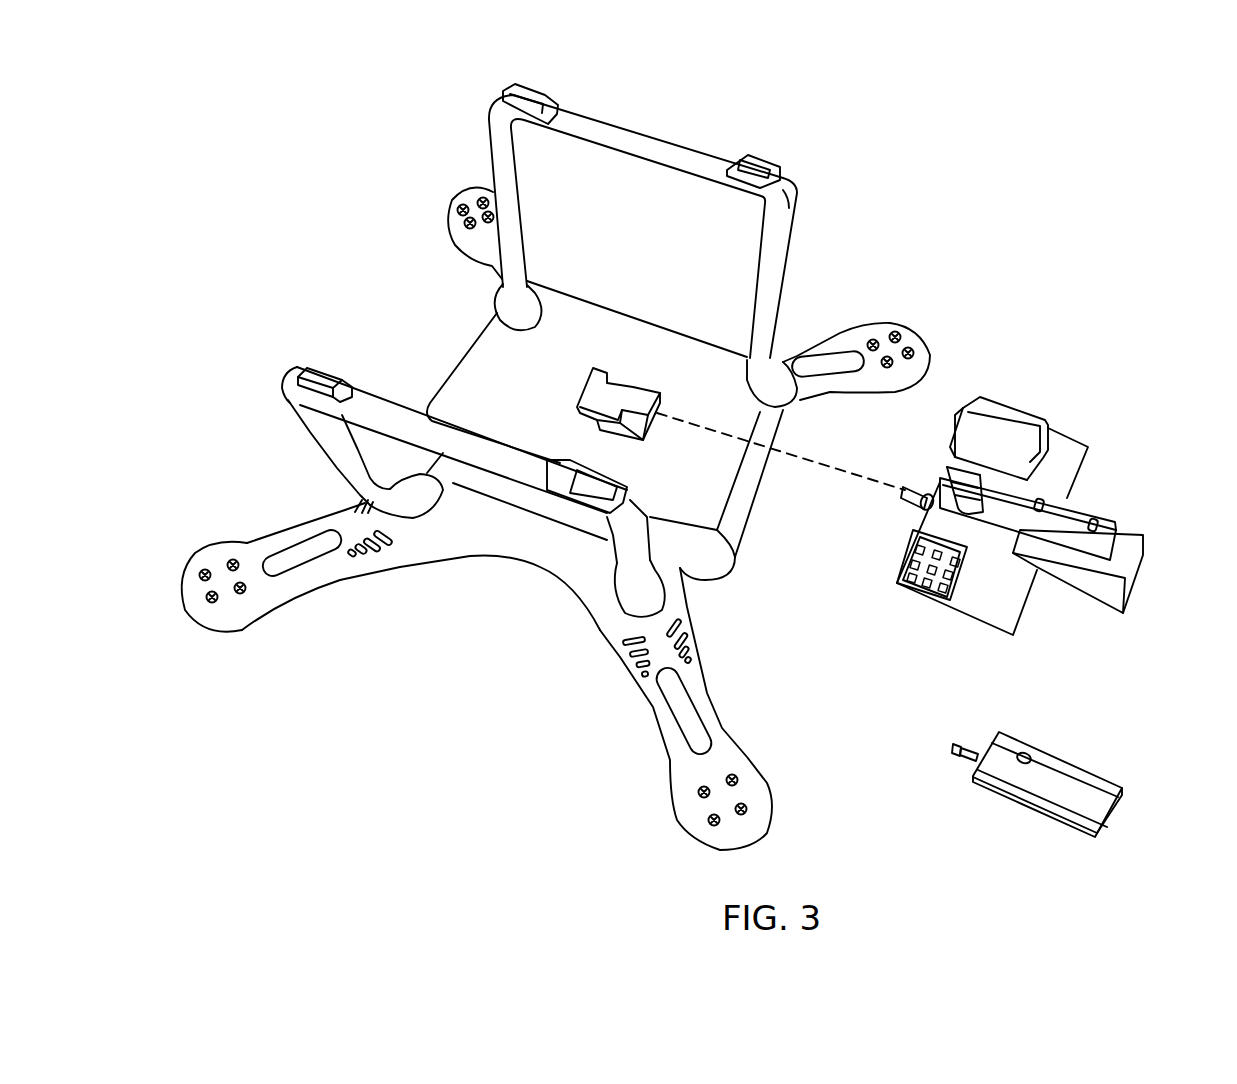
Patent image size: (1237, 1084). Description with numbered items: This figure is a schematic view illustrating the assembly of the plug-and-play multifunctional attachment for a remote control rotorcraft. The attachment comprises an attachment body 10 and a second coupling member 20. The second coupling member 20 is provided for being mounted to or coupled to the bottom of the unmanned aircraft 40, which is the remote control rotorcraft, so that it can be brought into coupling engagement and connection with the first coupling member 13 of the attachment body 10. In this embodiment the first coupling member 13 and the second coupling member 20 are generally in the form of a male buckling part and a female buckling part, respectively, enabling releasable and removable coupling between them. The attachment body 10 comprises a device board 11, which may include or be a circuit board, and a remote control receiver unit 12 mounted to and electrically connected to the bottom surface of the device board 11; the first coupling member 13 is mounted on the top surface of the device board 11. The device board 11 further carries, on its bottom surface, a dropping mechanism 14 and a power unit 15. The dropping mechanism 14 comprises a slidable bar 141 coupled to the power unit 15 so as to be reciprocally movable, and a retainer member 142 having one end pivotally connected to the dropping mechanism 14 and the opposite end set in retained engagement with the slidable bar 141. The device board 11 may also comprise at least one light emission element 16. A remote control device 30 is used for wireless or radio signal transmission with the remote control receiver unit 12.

The attachment body 10 is at (1020, 424).
The device board 11 is at (1060, 450).
The remote control receiver unit 12 is at (1008, 428).
The first coupling member 13 is at (905, 487).
The dropping mechanism 14 is at (1047, 479).
The slidable bar 141 is at (997, 493).
The retainer member 142 is at (968, 483).
The power unit 15 is at (1134, 578).
The light emission element 16 is at (913, 553).
The second coupling member 20 is at (628, 408).
The remote control device 30 is at (1056, 767).
The unmanned aircraft 40 is at (771, 258).